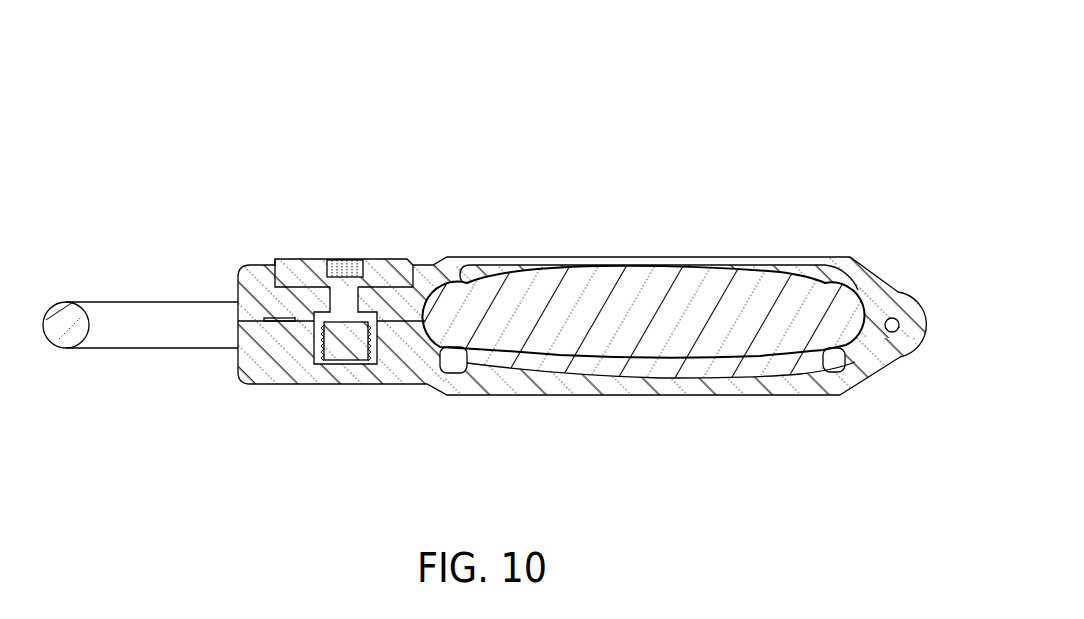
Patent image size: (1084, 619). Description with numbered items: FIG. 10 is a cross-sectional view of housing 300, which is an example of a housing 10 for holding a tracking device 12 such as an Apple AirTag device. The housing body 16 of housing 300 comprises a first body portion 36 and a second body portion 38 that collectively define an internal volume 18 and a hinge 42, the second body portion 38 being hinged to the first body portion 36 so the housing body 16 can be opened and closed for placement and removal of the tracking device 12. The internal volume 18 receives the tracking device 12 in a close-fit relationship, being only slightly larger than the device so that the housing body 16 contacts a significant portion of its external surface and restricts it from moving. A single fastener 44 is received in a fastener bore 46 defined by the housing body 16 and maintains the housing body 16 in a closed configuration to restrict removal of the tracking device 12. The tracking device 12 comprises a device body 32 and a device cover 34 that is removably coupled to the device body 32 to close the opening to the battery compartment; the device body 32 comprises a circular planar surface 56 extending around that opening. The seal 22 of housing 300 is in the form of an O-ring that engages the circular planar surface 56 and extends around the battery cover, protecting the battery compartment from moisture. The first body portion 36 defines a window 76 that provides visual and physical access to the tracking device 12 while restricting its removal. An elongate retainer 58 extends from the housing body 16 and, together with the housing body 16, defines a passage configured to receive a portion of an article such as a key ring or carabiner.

The housing 10 is at (832, 45).
The housing 300 is at (823, 83).
The elongate retainer 58 is at (129, 294).
The fastener 44 is at (307, 259).
The window 76 is at (480, 268).
The device body 32 is at (577, 266).
The housing body 16 is at (660, 250).
The first body portion 36 is at (798, 258).
The internal volume 18 is at (876, 300).
The hinge 42 is at (921, 318).
The fastener bore 46 is at (332, 342).
The seal 22 is at (457, 343).
The tracking device 12 is at (565, 384).
The device cover 34 is at (636, 380).
The second body portion 38 is at (680, 397).
The circular planar surface 56 is at (862, 382).